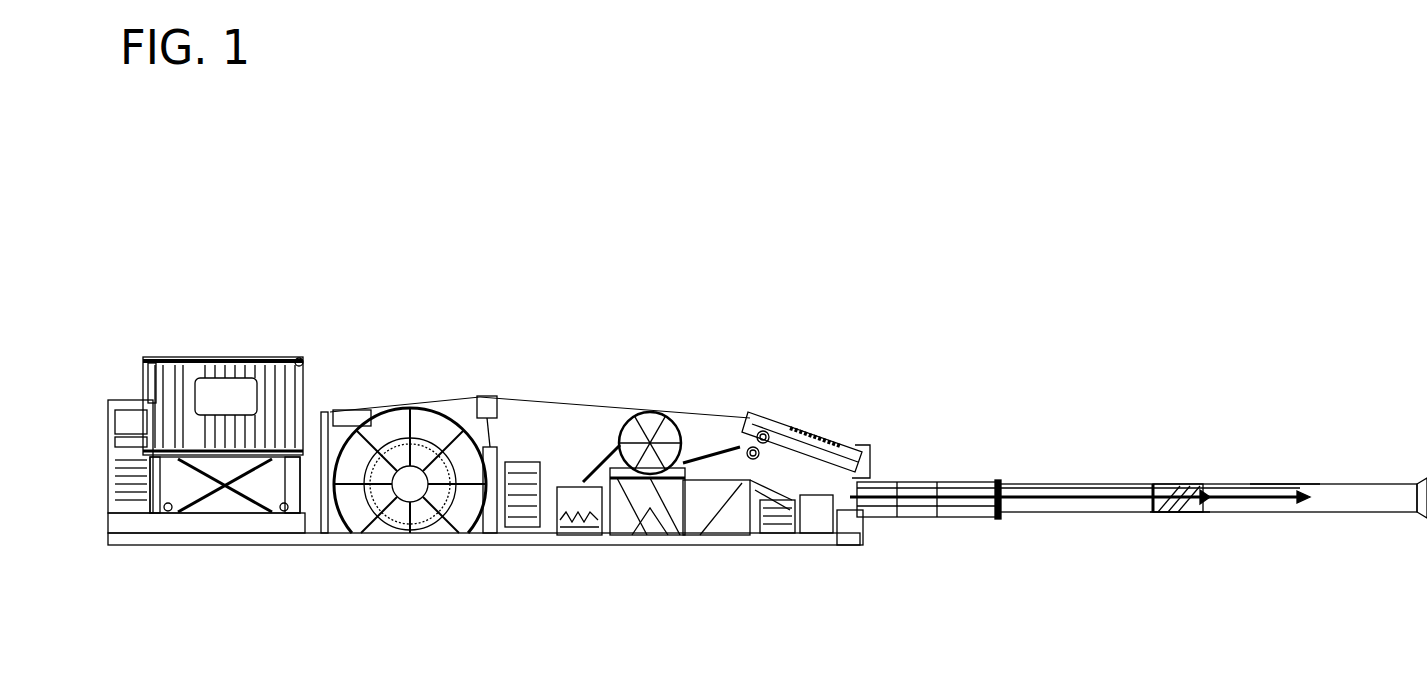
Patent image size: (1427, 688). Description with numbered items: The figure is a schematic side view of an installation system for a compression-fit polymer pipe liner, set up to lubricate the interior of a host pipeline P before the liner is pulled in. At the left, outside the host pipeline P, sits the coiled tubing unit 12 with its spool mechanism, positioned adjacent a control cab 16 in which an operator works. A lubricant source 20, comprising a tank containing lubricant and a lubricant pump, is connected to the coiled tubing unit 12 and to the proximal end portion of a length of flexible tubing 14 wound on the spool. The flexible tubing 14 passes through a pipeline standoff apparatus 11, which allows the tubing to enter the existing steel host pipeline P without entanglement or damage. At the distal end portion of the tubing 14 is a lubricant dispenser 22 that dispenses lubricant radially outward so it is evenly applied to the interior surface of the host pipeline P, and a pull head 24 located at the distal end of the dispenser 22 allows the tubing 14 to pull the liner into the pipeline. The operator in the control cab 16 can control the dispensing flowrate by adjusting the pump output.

The control cab 16 is at (176, 354).
The coiled tubing unit 12 is at (573, 393).
The lubricant source 20 is at (577, 517).
The pipeline standoff apparatus 11 is at (922, 522).
The flexible tubing 14 is at (1072, 518).
The lubricant dispenser 22 is at (1197, 485).
The pull head 24 is at (1170, 518).
The host pipeline P is at (1317, 485).